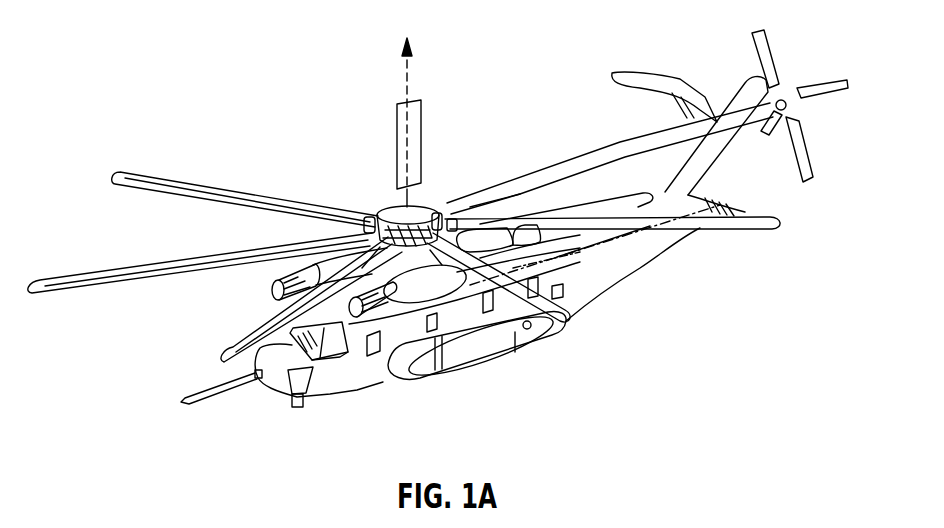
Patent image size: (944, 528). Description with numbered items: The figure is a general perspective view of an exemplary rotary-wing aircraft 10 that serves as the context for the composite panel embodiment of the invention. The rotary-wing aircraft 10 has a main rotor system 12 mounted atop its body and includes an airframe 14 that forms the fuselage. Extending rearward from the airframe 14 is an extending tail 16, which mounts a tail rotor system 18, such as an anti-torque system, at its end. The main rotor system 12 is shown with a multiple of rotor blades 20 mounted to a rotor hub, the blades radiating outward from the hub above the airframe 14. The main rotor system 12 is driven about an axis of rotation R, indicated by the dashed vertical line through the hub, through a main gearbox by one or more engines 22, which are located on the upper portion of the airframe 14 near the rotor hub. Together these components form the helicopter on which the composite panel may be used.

The rotary-wing aircraft 10 is at (496, 56).
The main rotor system 12 is at (390, 198).
The airframe 14 is at (597, 264).
The extending tail 16 is at (718, 183).
The tail rotor system 18 is at (799, 63).
The rotor blades 20 is at (165, 180).
The engines 22 is at (269, 290).